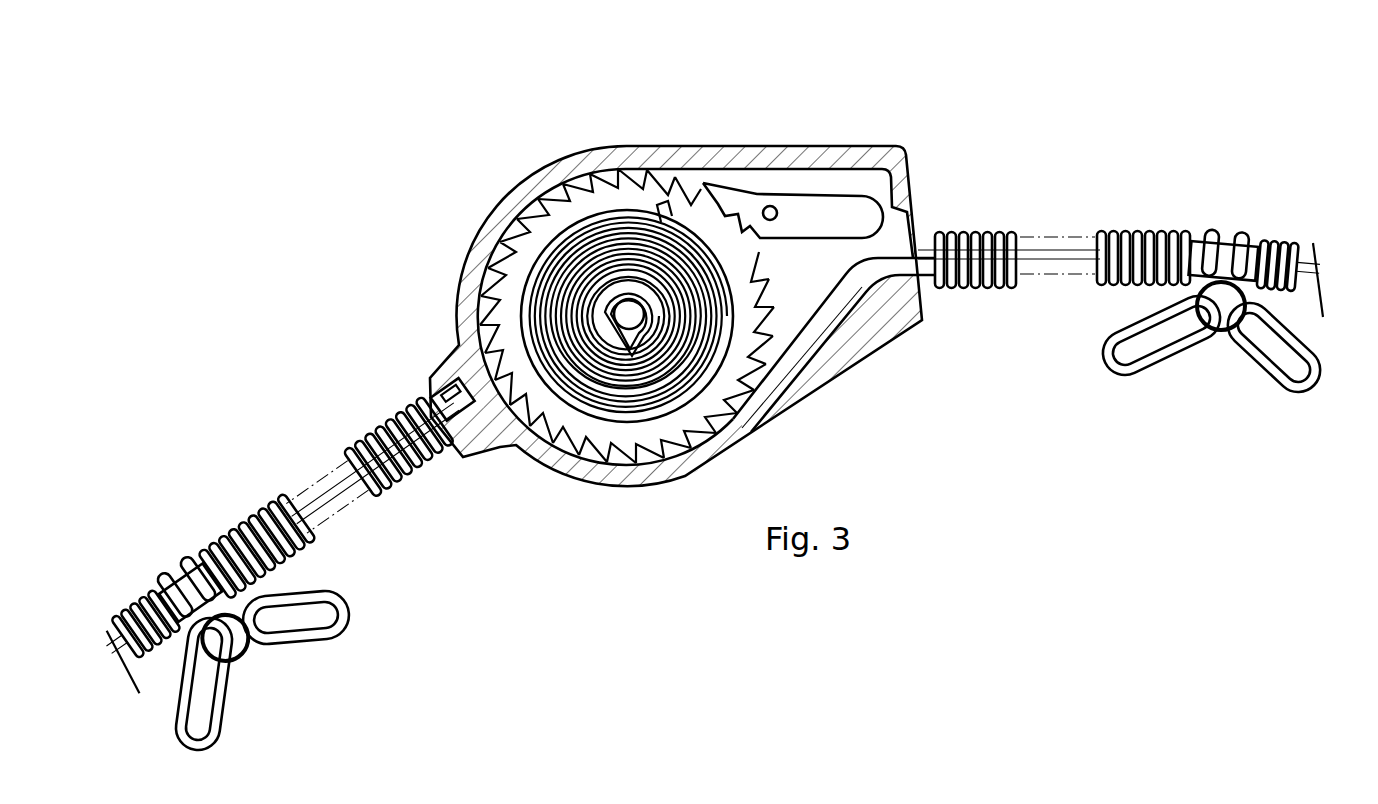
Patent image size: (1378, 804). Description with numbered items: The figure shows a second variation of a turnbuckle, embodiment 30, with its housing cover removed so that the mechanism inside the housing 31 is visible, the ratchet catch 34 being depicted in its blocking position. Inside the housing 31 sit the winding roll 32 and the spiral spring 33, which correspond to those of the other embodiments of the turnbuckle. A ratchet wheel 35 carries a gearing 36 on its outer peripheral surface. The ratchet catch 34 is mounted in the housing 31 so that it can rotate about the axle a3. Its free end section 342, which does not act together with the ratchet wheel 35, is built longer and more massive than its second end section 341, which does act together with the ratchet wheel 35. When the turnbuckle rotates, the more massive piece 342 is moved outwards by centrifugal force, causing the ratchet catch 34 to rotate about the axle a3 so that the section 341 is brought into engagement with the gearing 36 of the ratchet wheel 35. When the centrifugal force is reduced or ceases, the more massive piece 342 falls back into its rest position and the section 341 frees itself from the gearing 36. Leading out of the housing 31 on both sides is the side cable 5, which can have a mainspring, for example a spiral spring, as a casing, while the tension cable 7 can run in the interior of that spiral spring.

The turnbuckle embodiment 30 is at (310, 175).
The housing 31 is at (486, 240).
The winding roll 32 is at (610, 230).
The spiral spring 33 is at (622, 197).
The ratchet catch 34 is at (793, 173).
The second end section of the ratchet catch 341 is at (729, 193).
The free end section of the ratchet catch 342 is at (853, 215).
The ratchet wheel 35 is at (624, 195).
The gearing 36 is at (480, 245).
The axle a3 is at (776, 220).
The side cable 5 is at (1140, 235).
The tension cable 7 is at (1313, 260).